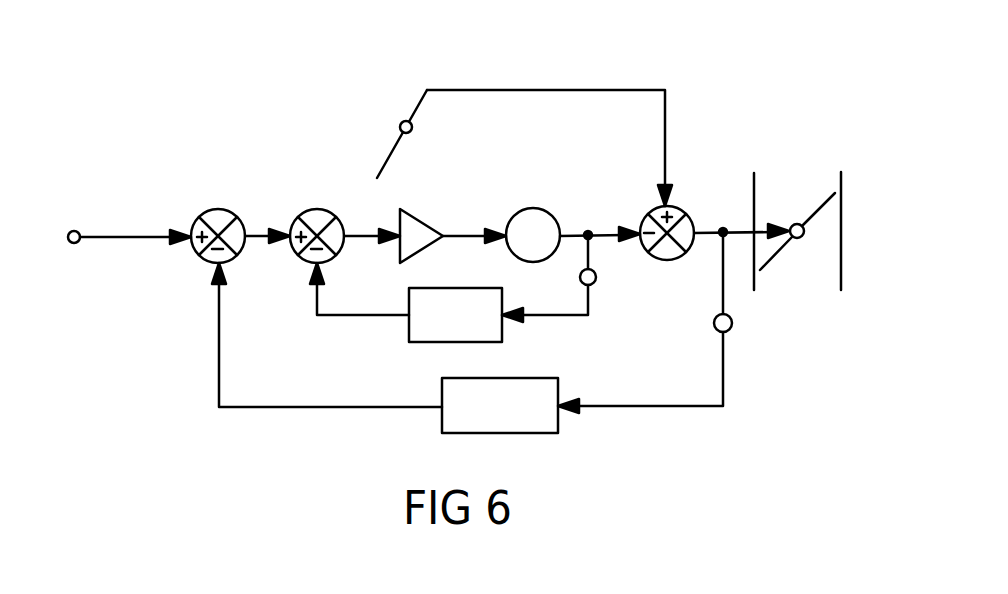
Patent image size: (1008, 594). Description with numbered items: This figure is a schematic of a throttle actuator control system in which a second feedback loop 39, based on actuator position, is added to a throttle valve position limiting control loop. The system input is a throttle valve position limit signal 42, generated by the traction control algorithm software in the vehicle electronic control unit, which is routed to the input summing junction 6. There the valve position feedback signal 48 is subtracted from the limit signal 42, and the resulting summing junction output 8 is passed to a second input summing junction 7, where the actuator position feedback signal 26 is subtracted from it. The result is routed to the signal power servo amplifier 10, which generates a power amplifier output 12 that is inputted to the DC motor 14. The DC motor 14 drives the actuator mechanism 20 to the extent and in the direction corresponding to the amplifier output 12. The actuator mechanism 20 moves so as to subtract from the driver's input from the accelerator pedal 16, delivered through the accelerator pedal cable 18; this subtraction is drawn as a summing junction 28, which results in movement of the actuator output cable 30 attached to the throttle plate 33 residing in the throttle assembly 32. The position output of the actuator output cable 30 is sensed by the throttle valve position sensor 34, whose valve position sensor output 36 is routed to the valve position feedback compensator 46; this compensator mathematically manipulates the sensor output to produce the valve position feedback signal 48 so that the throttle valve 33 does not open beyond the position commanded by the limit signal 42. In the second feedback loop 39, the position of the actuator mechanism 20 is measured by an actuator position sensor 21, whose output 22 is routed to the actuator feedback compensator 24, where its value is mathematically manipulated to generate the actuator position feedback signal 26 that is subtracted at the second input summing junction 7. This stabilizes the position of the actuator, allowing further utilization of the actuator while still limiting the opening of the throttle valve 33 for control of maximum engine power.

The input summing junction 6 is at (218, 209).
The second input summing junction 7 is at (317, 209).
The summing junction output 8 is at (252, 233).
The signal power servo amplifier 10 is at (420, 215).
The power amplifier output 12 is at (460, 238).
The DC motor 14 is at (540, 207).
The accelerator pedal 16 is at (390, 158).
The accelerator pedal cable 18 is at (520, 90).
The actuator mechanism 20 is at (573, 232).
The actuator position sensor 21 is at (580, 277).
The actuator position sensor output 22 is at (575, 317).
The actuator feedback compensator 24 is at (490, 343).
The actuator position feedback signal 26 is at (318, 300).
The third summing junction 28 is at (677, 207).
The actuator output cable 30 is at (706, 230).
The throttle assembly 32 is at (842, 180).
The throttle plate 33 is at (817, 207).
The throttle valve position sensor 34 is at (715, 318).
The valve position sensor output 36 is at (727, 342).
The second feedback loop 39 is at (395, 331).
The throttle valve position limit signal 42 is at (125, 233).
The valve position feedback compensator 46 is at (543, 433).
The valve position feedback signal 48 is at (353, 407).